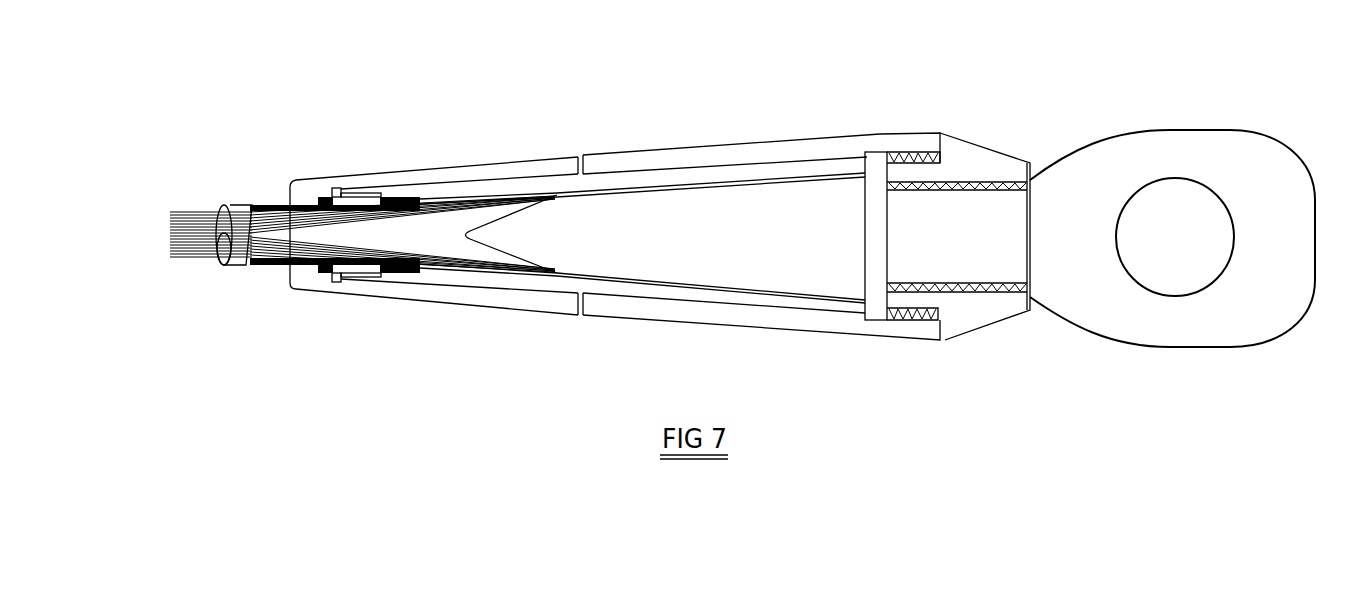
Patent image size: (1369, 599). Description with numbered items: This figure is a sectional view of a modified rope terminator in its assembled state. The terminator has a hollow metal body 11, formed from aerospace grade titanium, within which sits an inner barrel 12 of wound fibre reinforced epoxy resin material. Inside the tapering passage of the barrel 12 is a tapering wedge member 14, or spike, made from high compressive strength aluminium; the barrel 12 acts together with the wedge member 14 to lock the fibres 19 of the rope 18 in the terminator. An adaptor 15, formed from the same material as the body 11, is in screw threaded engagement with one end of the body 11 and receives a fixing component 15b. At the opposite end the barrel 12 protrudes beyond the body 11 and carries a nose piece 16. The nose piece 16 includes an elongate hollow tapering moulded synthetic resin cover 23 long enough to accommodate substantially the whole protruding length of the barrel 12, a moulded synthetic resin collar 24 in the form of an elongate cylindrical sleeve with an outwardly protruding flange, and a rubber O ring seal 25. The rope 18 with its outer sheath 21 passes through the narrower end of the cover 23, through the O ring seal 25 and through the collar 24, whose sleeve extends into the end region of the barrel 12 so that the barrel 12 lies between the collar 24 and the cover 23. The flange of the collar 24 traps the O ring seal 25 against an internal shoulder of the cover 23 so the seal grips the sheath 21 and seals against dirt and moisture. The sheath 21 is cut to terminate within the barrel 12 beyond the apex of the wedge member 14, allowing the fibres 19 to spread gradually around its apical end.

The hollow metal body 11 is at (690, 162).
The inner barrel 12 is at (563, 185).
The tapering wedge member 14 is at (807, 225).
The adaptor 15 is at (977, 160).
The fixing component 15b is at (1153, 148).
The nose piece 16 is at (457, 145).
The rope 18 is at (250, 288).
The fibres 19 is at (222, 243).
The outer sheath 21 is at (261, 205).
The cover 23 is at (517, 173).
The collar 24 is at (365, 197).
The O ring seal 25 is at (325, 197).